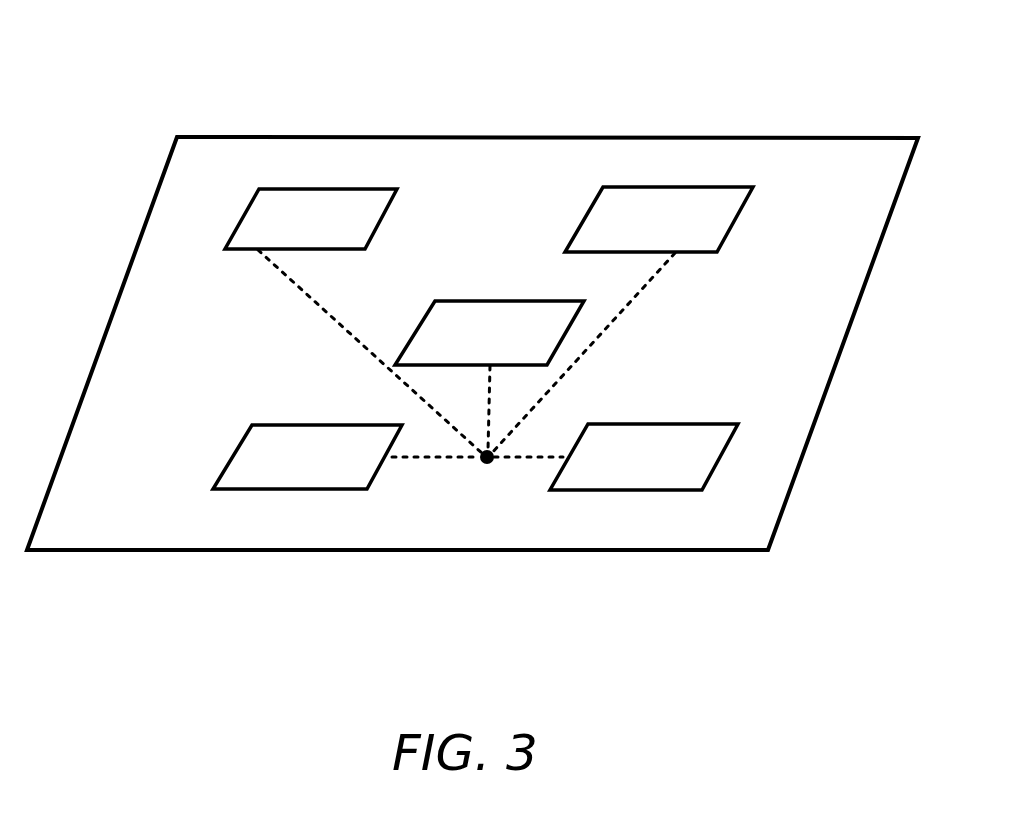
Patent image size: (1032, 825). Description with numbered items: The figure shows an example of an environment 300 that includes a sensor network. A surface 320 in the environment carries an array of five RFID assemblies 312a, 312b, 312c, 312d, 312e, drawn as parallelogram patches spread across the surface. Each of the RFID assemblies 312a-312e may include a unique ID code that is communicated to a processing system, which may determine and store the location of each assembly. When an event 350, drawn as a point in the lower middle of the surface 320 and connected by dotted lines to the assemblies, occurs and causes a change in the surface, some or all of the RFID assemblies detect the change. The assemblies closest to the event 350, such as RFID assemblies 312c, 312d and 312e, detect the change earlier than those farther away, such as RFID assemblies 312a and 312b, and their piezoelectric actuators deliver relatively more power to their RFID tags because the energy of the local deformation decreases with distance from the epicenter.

The environment 300 is at (349, 66).
The surface 320 is at (740, 138).
The RFID assembly 312a is at (283, 234).
The RFID assembly 312b is at (630, 234).
The RFID assembly 312c is at (461, 346).
The RFID assembly 312d is at (278, 471).
The RFID assembly 312e is at (613, 471).
The event 350 is at (487, 464).